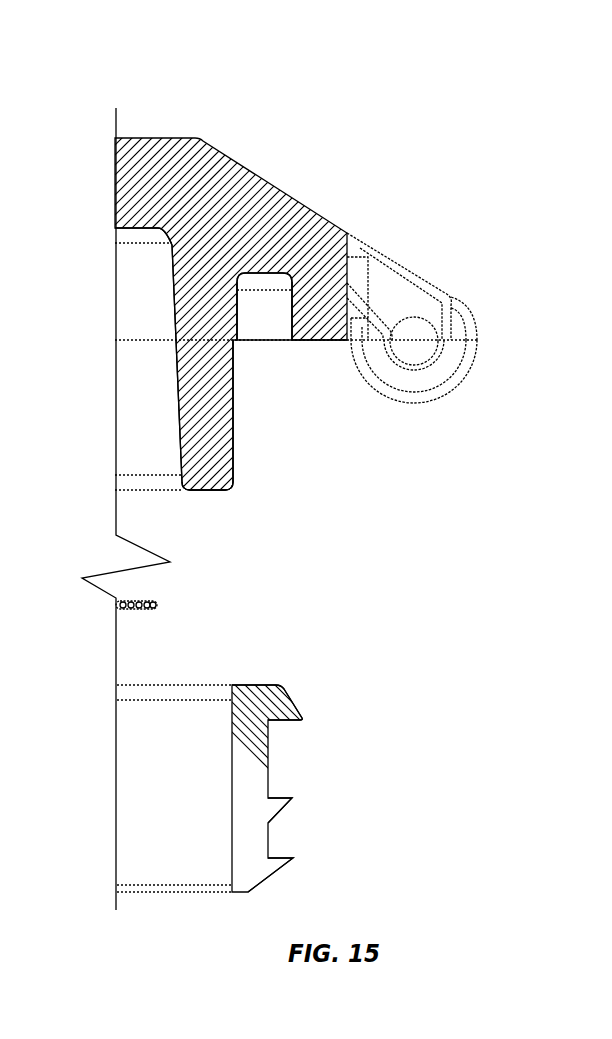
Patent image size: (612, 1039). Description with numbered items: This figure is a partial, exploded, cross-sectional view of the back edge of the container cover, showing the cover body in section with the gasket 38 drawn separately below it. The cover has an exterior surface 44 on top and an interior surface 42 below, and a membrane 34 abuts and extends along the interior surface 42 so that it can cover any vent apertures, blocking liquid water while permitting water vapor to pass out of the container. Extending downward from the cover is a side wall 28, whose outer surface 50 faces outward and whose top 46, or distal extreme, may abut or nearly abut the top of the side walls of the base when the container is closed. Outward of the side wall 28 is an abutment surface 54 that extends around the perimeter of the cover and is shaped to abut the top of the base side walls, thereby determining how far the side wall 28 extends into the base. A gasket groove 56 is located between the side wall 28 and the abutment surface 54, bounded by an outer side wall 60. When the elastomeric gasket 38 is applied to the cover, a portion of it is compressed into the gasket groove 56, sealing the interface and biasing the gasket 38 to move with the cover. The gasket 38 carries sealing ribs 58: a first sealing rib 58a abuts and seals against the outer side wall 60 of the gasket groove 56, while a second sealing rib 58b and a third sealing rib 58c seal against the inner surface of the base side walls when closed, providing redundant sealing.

The exterior surface 44 is at (152, 137).
The interior surface 42 is at (136, 232).
The outer side wall of gasket groove 60 is at (286, 312).
The gasket groove 56 is at (258, 270).
The side wall 28 is at (207, 407).
The outer surface 50 is at (238, 452).
The top 46 is at (208, 494).
The abutment surface 54 is at (318, 344).
The membrane 34 is at (140, 609).
The gasket 38 is at (182, 753).
The sealing ribs 58 is at (306, 500).
The first sealing rib 58a is at (303, 715).
The second sealing rib 58b is at (294, 800).
The third sealing rib 58c is at (292, 862).